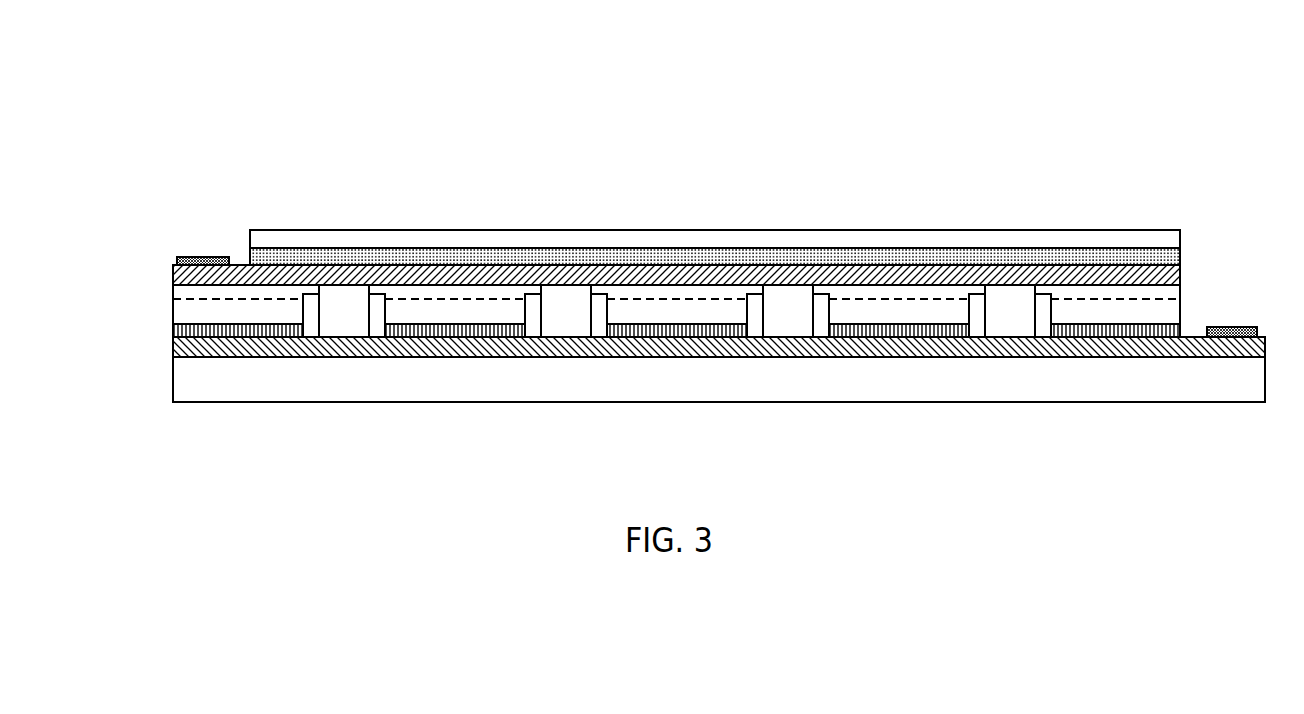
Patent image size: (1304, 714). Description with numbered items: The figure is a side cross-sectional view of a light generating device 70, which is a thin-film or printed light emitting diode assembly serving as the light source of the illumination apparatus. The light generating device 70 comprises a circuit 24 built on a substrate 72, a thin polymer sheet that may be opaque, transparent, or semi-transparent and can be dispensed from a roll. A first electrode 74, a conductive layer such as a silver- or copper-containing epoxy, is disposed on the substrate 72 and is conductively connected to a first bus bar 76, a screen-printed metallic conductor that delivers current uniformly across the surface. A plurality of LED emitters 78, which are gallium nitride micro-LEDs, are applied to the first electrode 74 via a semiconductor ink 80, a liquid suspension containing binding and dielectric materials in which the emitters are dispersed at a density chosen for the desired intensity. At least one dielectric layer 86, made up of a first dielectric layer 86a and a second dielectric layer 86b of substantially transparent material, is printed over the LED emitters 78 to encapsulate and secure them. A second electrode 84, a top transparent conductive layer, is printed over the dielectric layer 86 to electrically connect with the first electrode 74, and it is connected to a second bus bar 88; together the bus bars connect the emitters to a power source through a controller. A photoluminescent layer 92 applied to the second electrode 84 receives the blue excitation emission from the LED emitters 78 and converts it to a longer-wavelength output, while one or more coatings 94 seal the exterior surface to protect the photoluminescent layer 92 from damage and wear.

The circuit 24 is at (684, 227).
The light generating device 70 is at (814, 80).
The substrate 72 is at (172, 383).
The first electrode 74 is at (172, 348).
The first bus bar 76 is at (1237, 325).
The LED emitters 78 is at (342, 288).
The semiconductor ink 80 is at (172, 330).
The second electrode 84 is at (172, 268).
The dielectric layer 86 is at (655, 285).
The first dielectric layer 86a is at (172, 312).
The second dielectric layer 86b is at (172, 287).
The second bus bar 88 is at (216, 262).
The photoluminescent layer 92 is at (1177, 256).
The coatings 94 is at (309, 243).